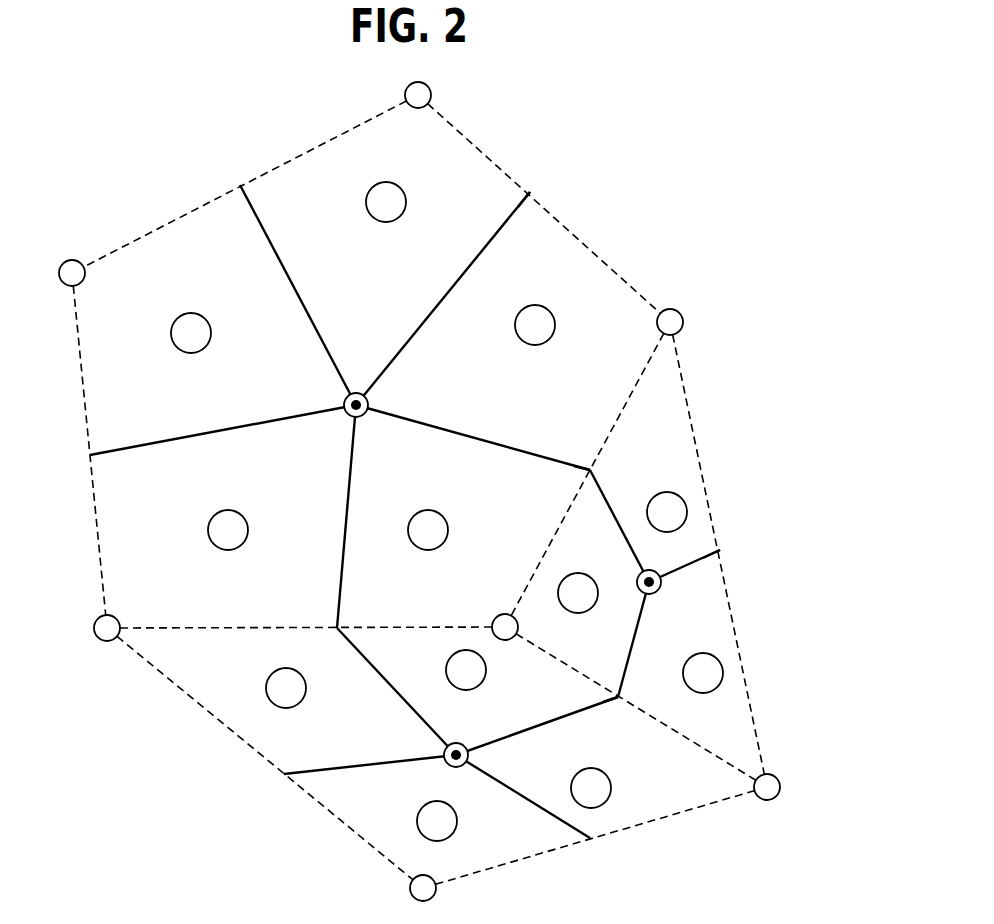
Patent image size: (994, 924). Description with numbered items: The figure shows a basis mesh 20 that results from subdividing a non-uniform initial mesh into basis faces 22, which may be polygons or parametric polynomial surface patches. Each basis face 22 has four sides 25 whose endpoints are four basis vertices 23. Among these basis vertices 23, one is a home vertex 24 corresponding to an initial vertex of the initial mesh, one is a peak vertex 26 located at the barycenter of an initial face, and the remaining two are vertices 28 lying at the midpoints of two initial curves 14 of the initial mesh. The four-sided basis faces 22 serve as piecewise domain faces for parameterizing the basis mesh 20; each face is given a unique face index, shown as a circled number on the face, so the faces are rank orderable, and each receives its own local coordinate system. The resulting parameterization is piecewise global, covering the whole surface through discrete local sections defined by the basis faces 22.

The basis mesh 20 is at (477, 491).
The initial curves 14 is at (699, 457).
The basis faces 22 is at (363, 277).
The basis vertices 23 is at (477, 491).
The home vertex 24 is at (683, 323).
The sides 25 is at (138, 238).
The peak vertex 26 is at (356, 392).
The vertices at midpoints of initial curves 28 is at (532, 190).